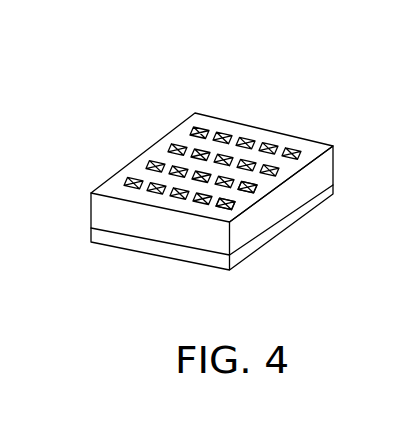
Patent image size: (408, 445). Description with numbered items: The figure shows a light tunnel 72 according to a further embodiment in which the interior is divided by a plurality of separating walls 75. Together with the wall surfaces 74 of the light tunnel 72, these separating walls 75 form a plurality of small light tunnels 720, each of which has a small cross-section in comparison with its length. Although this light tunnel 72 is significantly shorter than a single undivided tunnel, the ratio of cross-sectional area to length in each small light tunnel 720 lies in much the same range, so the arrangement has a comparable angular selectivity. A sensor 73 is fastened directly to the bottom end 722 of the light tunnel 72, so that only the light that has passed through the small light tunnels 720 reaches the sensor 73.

The light tunnel 72 is at (145, 152).
The bottom end 722 is at (91, 223).
The sensor 73 is at (110, 238).
The wall surfaces 74 is at (333, 163).
The separating walls 75 is at (217, 131).
The small light tunnels 720 is at (256, 186).